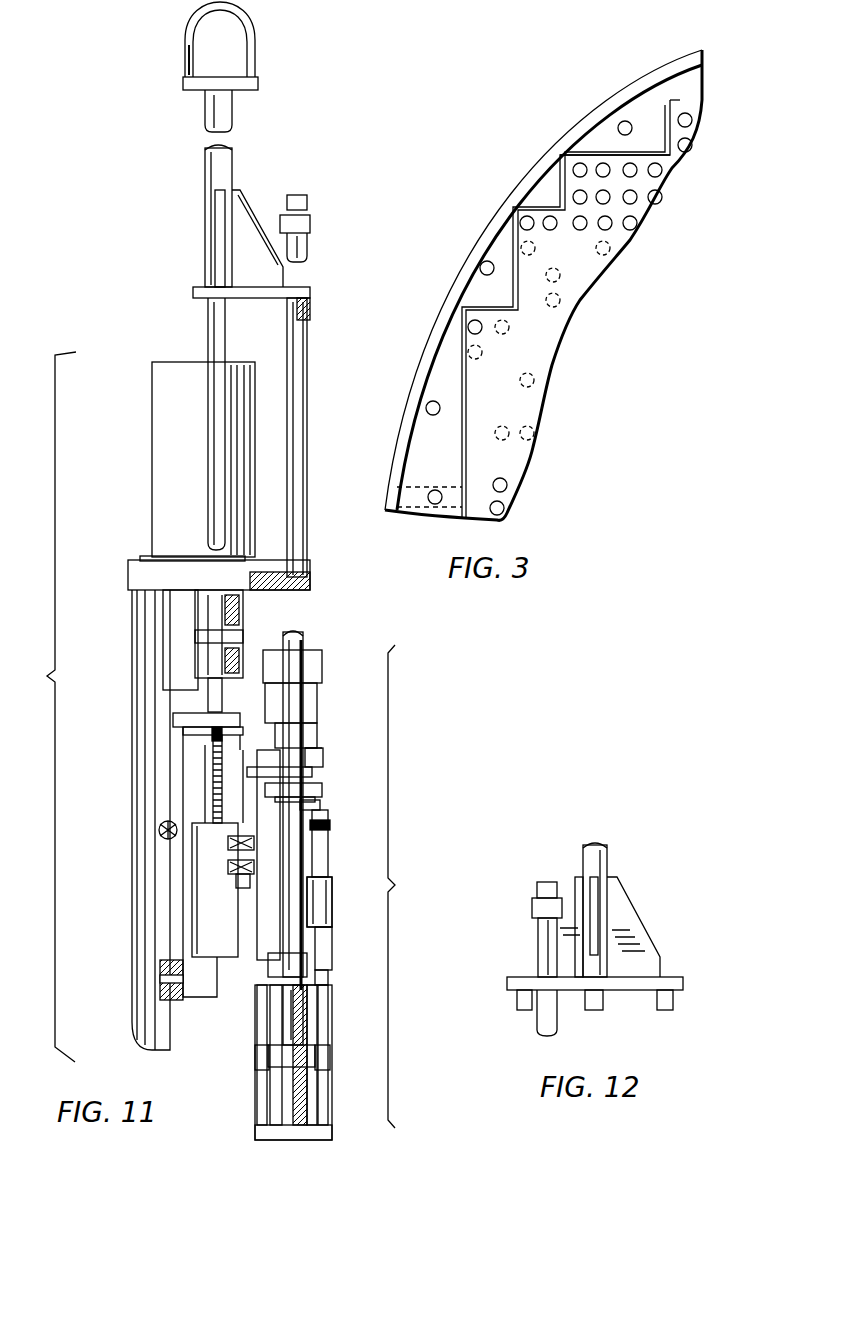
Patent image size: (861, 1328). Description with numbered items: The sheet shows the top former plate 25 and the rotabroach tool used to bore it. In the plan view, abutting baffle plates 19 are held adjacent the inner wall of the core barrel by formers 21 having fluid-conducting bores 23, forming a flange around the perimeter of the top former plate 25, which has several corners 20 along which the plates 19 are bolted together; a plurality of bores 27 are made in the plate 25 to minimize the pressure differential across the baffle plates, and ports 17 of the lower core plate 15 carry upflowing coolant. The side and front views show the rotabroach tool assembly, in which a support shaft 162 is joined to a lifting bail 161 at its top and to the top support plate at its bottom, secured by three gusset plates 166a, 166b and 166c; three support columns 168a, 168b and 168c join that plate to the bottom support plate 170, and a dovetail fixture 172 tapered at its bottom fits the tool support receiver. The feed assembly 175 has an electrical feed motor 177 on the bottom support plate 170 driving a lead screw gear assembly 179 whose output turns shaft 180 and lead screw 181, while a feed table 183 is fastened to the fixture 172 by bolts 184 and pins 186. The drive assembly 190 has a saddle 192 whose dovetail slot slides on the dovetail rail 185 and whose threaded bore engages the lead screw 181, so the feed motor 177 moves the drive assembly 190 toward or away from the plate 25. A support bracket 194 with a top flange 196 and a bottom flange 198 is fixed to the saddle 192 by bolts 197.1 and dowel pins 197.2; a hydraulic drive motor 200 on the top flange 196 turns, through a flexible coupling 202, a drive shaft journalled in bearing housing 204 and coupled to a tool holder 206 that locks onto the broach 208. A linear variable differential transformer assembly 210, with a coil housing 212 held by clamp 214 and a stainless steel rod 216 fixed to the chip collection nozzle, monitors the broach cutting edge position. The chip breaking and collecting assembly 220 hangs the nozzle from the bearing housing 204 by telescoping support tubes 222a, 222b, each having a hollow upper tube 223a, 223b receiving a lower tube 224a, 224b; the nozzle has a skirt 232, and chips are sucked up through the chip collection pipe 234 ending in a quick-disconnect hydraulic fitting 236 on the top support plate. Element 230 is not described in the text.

In FIG. 3, the lower core plate 15 is at (575, 265).
In FIG. 3, the ports 17 is at (605, 228).
In FIG. 3, the baffle plates 19 is at (615, 160).
In FIG. 3, the corners 20 is at (685, 125).
In FIG. 3, the formers 21 is at (442, 497).
In FIG. 3, the fluid-conducting bores 23 is at (438, 492).
In FIG. 3, the top former plate 25 is at (656, 115).
In FIG. 3, the bores 27 is at (620, 122).
In FIG. 11, the lifting bail 161 is at (250, 40).
In FIG. 11, the support shaft 162 is at (230, 165).
In FIG. 12, the support shaft 162 is at (607, 847).
In FIG. 11, the gusset plate 166a is at (218, 232).
In FIG. 12, the gusset plate 166a is at (577, 893).
In FIG. 11, the gusset plate 166b is at (272, 265).
In FIG. 12, the gusset plate 166b is at (595, 893).
In FIG. 12, the gusset plate 166c is at (625, 925).
In FIG. 11, the support column 168a is at (214, 331).
In FIG. 12, the support column 168a is at (517, 1000).
In FIG. 12, the support column 168b is at (592, 1005).
In FIG. 12, the support column 168c is at (673, 1002).
In FIG. 11, the bottom support plate 170 is at (148, 583).
In FIG. 11, the dovetail fixture 172 is at (150, 672).
In FIG. 11, the feed assembly 175 is at (43, 707).
In FIG. 11, the electrical feed motor 177 is at (195, 440).
In FIG. 11, the lead screw gear assembly 179 is at (238, 622).
In FIG. 11, the shaft 180 is at (220, 696).
In FIG. 11, the lead screw 181 is at (220, 740).
In FIG. 11, the feed table 183 is at (195, 790).
In FIG. 11, the bolts 184 is at (162, 830).
In FIG. 11, the dovetail rail 185 is at (210, 808).
In FIG. 11, the pins 186 is at (162, 968).
In FIG. 11, the drive assembly 190 is at (411, 886).
In FIG. 11, the saddle 192 is at (233, 875).
In FIG. 11, the support bracket 194 is at (314, 747).
In FIG. 11, the top flange 196 is at (318, 760).
In FIG. 11, the bolts 197.1 is at (228, 843).
In FIG. 11, the dowel pins 197.2 is at (242, 888).
In FIG. 11, the bottom flange 198 is at (250, 775).
In FIG. 11, the hydraulic drive motor 200 is at (314, 671).
In FIG. 11, the flexible coupling 202 is at (320, 791).
In FIG. 11, the bearing housing 204 is at (305, 812).
In FIG. 11, the tool holder 206 is at (300, 1012).
In FIG. 11, the broach 208 is at (303, 1102).
In FIG. 11, the linear variable differential transformer assembly 210 is at (333, 890).
In FIG. 11, the coil housing 212 is at (324, 843).
In FIG. 11, the clamp 214 is at (325, 908).
In FIG. 11, the stainless steel rod 216 is at (323, 978).
In FIG. 11, the chip breaking and collecting assembly 220 is at (252, 1128).
In FIG. 11, the telescoping support tube 222a is at (322, 1048).
In FIG. 11, the telescoping support tube 222b is at (258, 1065).
In FIG. 11, the upper tube 223a is at (326, 1019).
In FIG. 11, the upper tube 223b is at (258, 1043).
In FIG. 11, the lower tube 224a is at (318, 1105).
In FIG. 11, the lower tube 224b is at (268, 1095).
In FIG. 11, the block 230 is at (285, 1136).
In FIG. 11, the skirt 232 is at (326, 1138).
In FIG. 11, the chip collection pipe 234 is at (300, 345).
In FIG. 12, the chip collection pipe 234 is at (543, 936).
In FIG. 11, the quick-disconnect hydraulic fitting 236 is at (307, 215).
In FIG. 12, the quick-disconnect hydraulic fitting 236 is at (535, 907).